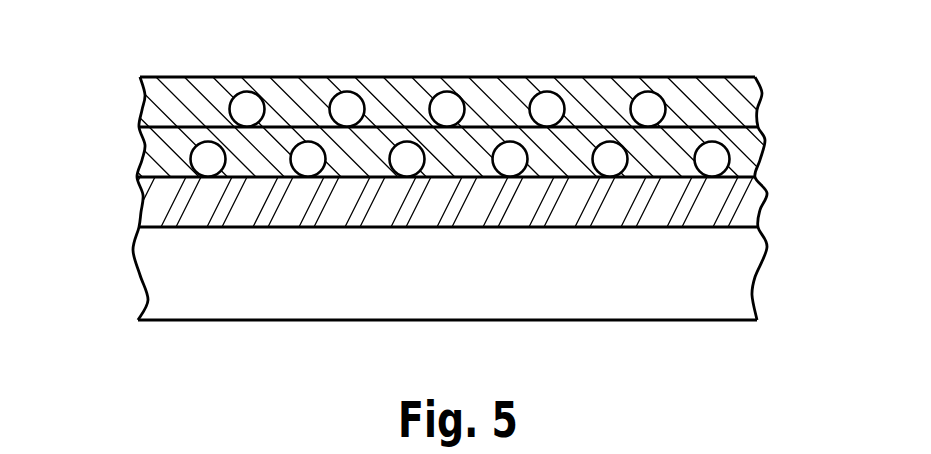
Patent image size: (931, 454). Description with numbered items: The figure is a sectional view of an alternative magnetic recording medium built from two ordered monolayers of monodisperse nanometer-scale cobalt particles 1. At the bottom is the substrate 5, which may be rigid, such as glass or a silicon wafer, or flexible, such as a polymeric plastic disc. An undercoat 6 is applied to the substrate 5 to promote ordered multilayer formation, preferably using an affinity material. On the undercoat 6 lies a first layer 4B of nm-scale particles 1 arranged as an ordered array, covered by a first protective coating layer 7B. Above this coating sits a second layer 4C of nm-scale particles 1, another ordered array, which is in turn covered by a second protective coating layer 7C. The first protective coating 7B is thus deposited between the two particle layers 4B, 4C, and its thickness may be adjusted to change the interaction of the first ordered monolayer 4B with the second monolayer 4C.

The nm-scale Co particles 1 is at (445, 104).
The second layer of nm-scale particles 4C is at (140, 107).
The first layer of nm-scale particles 4B is at (140, 162).
The second protective coating layer 7C is at (737, 103).
The first protective coating layer 7B is at (745, 157).
The undercoat 6 is at (160, 212).
The substrate 5 is at (183, 277).